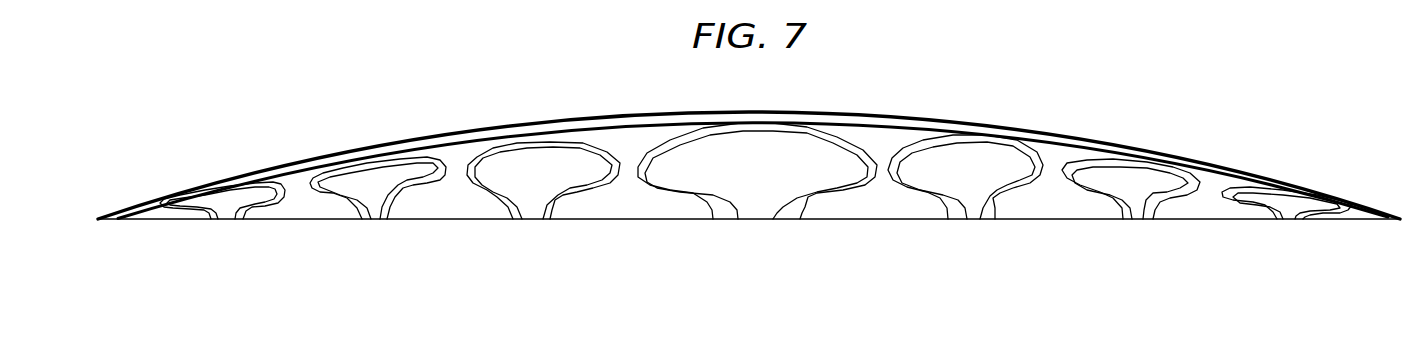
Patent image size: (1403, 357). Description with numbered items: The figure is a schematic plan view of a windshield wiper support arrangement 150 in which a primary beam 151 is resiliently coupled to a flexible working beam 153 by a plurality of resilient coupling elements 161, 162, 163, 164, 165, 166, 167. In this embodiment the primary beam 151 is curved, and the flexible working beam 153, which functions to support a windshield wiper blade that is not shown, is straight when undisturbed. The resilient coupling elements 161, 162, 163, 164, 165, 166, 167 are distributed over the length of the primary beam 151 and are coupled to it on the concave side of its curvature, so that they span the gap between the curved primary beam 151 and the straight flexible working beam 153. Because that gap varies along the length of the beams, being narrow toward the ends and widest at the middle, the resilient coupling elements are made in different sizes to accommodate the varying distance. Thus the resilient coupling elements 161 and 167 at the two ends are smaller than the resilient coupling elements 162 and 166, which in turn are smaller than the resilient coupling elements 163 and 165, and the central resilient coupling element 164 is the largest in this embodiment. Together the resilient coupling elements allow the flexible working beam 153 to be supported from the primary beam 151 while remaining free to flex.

The windshield wiper support arrangement 150 is at (276, 122).
The primary beam 151 is at (623, 127).
The flexible working beam 153 is at (922, 219).
The resilient coupling element 161 is at (268, 204).
The resilient coupling element 162 is at (410, 198).
The resilient coupling element 163 is at (583, 197).
The resilient coupling element 164 is at (840, 192).
The resilient coupling element 165 is at (1027, 188).
The resilient coupling element 166 is at (1175, 200).
The resilient coupling element 167 is at (1323, 213).